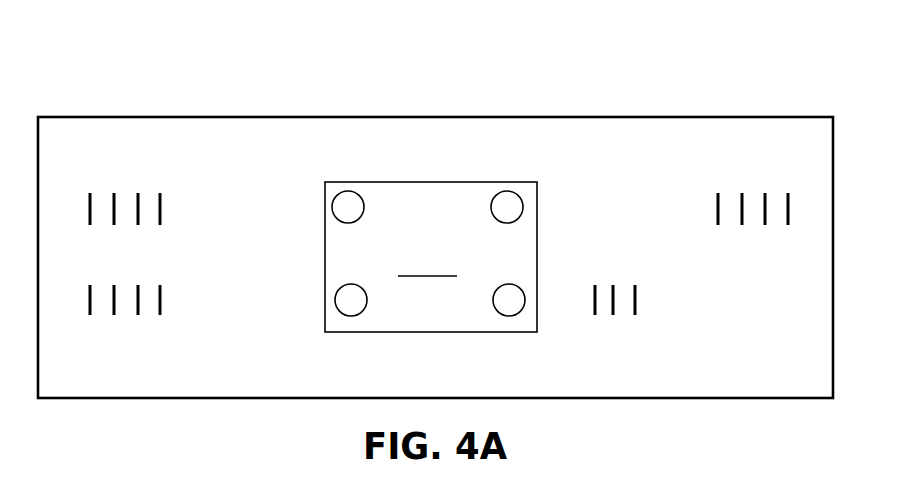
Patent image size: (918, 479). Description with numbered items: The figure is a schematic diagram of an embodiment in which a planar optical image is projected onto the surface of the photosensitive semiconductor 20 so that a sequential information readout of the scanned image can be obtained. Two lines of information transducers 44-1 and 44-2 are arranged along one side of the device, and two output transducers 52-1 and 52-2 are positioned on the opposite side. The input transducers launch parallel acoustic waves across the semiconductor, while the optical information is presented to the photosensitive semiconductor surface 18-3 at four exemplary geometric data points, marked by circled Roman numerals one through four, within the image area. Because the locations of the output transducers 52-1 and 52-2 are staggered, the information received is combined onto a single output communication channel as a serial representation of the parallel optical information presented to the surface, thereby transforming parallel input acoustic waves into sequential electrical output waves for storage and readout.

The photosensitive semiconductor surface 18-3 is at (480, 123).
The photosensitive semiconductor 20 is at (532, 185).
The information transducer 44-1 is at (143, 172).
The information transducer 44-2 is at (179, 317).
The output transducer 52-1 is at (758, 162).
The output transducer 52-2 is at (673, 315).